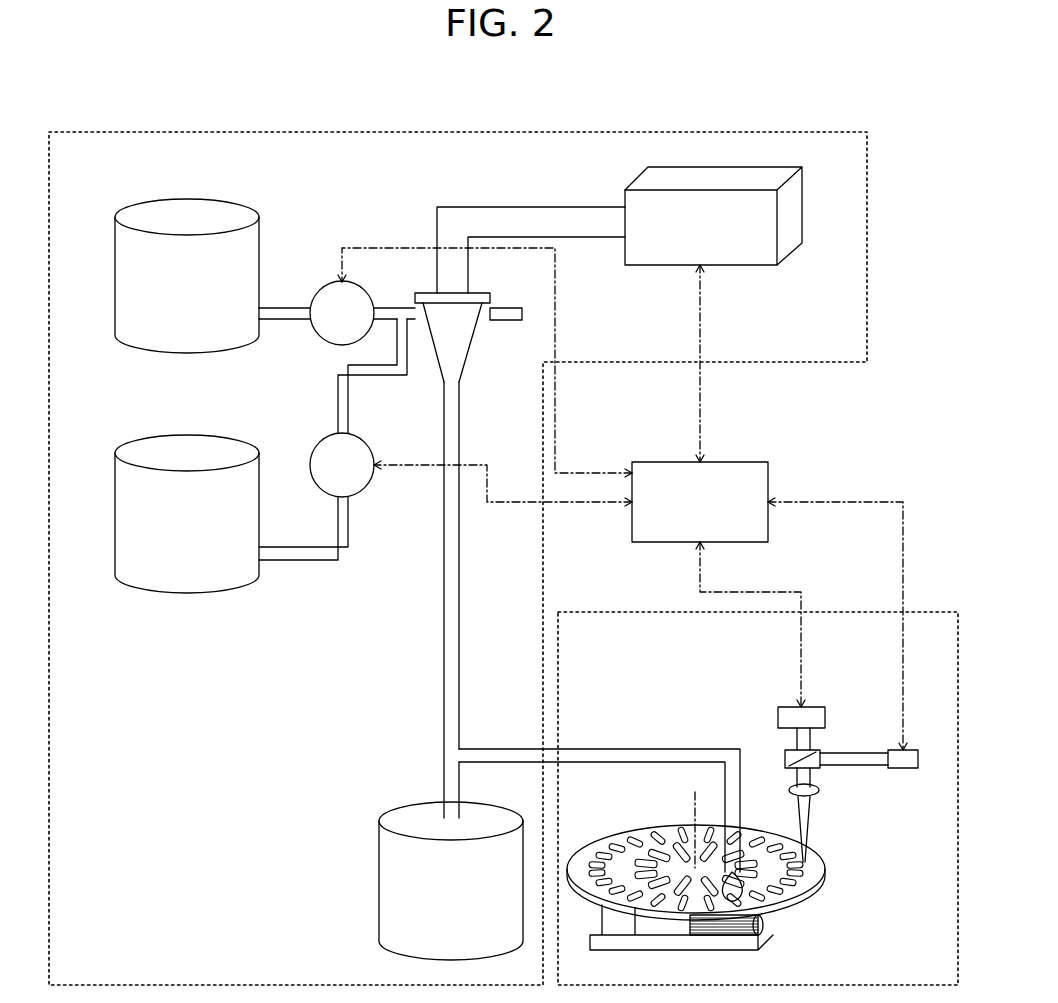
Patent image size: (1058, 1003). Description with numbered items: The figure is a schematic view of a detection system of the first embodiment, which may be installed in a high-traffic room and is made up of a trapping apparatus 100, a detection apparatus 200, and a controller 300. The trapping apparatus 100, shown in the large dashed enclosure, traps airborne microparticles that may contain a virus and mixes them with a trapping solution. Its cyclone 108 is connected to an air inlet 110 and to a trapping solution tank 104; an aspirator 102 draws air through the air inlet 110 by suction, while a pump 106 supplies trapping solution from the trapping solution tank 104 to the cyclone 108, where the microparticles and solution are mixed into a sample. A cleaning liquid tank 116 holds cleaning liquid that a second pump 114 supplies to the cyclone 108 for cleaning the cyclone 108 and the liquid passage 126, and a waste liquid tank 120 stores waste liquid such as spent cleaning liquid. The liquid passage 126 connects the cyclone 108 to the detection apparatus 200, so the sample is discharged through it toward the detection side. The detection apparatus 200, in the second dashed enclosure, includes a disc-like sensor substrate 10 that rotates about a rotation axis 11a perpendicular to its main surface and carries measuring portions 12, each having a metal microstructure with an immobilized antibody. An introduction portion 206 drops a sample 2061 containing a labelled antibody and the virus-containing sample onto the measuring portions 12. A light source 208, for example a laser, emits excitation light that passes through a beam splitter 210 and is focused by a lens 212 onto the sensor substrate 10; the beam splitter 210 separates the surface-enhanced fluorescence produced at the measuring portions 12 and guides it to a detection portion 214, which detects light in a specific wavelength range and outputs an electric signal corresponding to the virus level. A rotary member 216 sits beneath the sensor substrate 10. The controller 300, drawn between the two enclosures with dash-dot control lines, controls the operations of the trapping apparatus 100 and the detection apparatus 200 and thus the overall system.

The trapping apparatus 100 is at (100, 130).
The aspirator 102 is at (803, 207).
The trapping solution tank 104 is at (117, 266).
The pump 106 is at (331, 287).
The cyclone 108 is at (473, 346).
The air inlet 110 is at (522, 314).
The pump 114 is at (322, 440).
The cleaning liquid tank 116 is at (115, 510).
The waste liquid tank 120 is at (379, 898).
The liquid passage 126 is at (460, 546).
The detection apparatus 200 is at (848, 612).
The introduction portion 206 is at (665, 748).
The sample 2061 is at (655, 922).
The light source 208 is at (825, 711).
The beam splitter 210 is at (822, 769).
The lens 212 is at (820, 797).
The detection portion 214 is at (905, 769).
The rotary member 216 is at (762, 938).
The controller 300 is at (768, 478).
The sensor substrate 10 is at (637, 832).
The rotation axis 11a is at (701, 817).
The measuring portions 12 is at (600, 834).